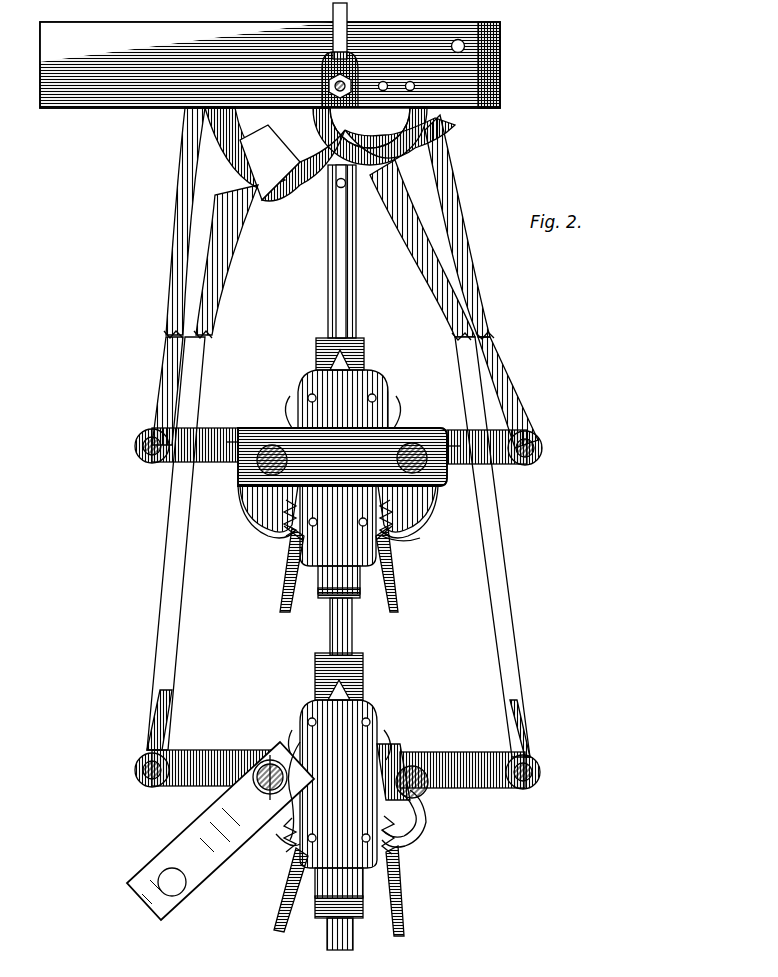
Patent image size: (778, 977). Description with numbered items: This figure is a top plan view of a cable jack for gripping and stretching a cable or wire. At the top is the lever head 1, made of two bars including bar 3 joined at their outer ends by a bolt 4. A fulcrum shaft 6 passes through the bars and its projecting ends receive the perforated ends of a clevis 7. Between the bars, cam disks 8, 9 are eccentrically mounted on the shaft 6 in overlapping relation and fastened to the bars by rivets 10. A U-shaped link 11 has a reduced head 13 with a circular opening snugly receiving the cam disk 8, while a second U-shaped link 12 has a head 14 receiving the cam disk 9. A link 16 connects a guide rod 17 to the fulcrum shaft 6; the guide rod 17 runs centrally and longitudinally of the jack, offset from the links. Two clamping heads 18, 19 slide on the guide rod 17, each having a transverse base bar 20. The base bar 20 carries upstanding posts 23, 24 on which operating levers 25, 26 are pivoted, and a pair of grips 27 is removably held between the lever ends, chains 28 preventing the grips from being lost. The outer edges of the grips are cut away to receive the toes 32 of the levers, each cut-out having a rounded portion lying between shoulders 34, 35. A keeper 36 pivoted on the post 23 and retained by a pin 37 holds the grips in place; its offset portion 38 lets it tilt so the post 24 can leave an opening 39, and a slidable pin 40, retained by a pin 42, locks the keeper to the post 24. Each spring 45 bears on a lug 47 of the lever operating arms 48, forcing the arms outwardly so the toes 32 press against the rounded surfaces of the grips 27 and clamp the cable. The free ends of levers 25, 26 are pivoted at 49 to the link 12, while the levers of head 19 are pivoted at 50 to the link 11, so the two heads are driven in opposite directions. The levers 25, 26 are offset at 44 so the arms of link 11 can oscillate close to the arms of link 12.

The lever head 1 is at (270, 55).
The bar 3 is at (446, 36).
The bolt 4 is at (462, 42).
The fulcrum shaft 6 is at (326, 56).
The clevis 7 is at (350, 24).
The cam disk 8 is at (390, 148).
The cam disk 9 is at (282, 152).
The rivets 10 is at (411, 81).
The U-shaped link 11 is at (500, 552).
The U-shaped link 12 is at (492, 356).
The head 13 is at (432, 118).
The head 14 is at (245, 115).
The link 16 is at (336, 184).
The guide rod 17 is at (352, 270).
The clamping head 18 is at (347, 377).
The clamping head 19 is at (340, 793).
The base bar 20 is at (404, 756).
The post 23 is at (262, 470).
The post 24 is at (440, 496).
The operating lever 25 is at (222, 432).
The operating lever 26 is at (446, 434).
The grips 27 is at (300, 412).
The chains 28 is at (350, 368).
The operating ends 32 is at (290, 410).
The shoulder 34 is at (292, 732).
The shoulder 35 is at (280, 846).
The keeper 36 is at (270, 528).
The pin 37 is at (270, 446).
The offset portion 38 is at (252, 508).
The opening 39 is at (178, 896).
The pin 40 is at (420, 530).
The pin 42 is at (412, 443).
The offset 44 is at (236, 430).
The spring 45 is at (284, 538).
The lug 47 is at (298, 544).
The operating arms 48 is at (282, 600).
The pivot 49 is at (146, 462).
The pivot 50 is at (136, 778).